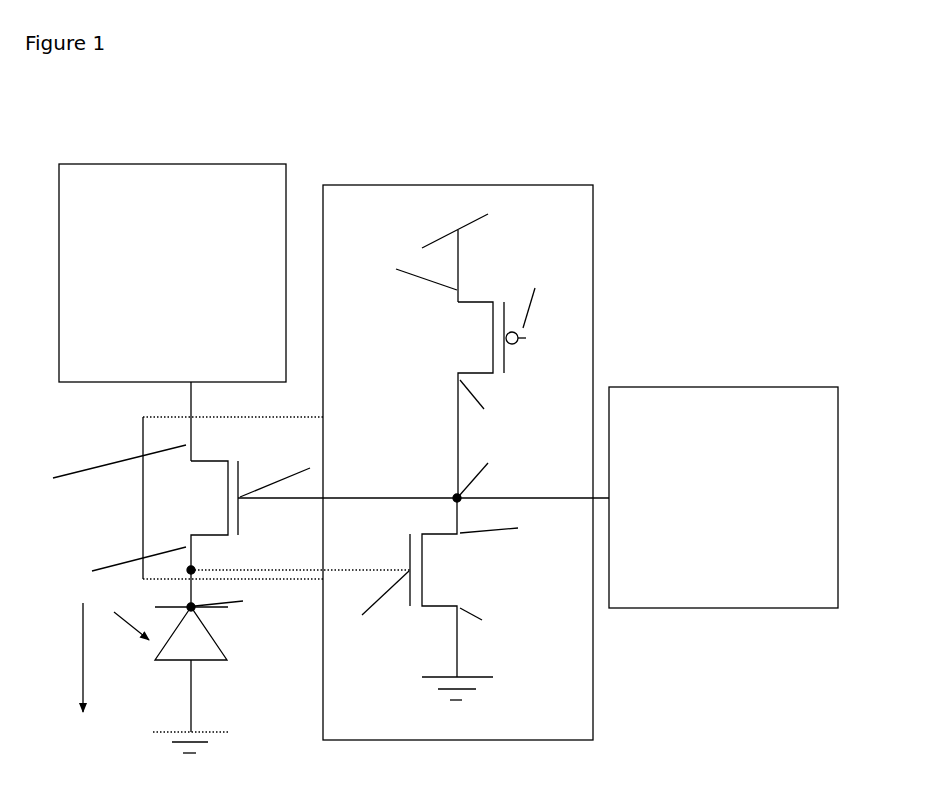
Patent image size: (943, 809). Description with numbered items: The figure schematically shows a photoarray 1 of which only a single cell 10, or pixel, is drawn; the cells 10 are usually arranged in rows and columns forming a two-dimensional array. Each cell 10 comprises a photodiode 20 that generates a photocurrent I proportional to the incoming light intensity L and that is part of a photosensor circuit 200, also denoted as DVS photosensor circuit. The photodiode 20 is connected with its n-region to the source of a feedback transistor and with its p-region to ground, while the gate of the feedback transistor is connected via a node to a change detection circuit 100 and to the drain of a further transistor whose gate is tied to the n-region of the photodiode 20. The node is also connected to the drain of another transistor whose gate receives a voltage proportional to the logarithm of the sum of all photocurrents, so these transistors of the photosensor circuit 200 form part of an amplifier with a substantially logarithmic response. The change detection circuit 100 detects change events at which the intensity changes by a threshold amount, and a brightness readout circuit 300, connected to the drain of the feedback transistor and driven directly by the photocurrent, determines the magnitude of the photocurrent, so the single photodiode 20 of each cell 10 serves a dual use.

The photoarray 1 is at (672, 242).
The cell 10 is at (451, 167).
The photodiode 20 is at (193, 644).
The change detection circuit 100 is at (723, 497).
The photosensor circuit 200 is at (536, 185).
The brightness readout circuit 300 is at (172, 273).